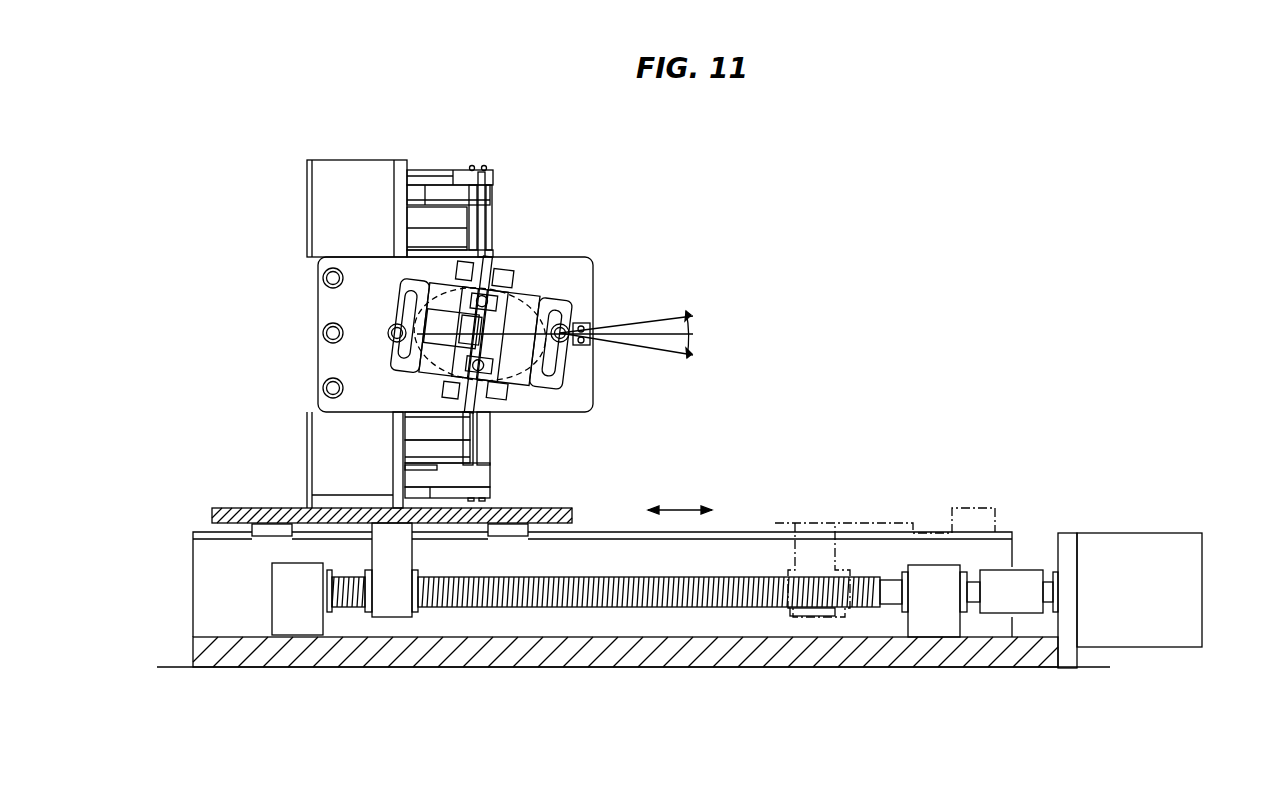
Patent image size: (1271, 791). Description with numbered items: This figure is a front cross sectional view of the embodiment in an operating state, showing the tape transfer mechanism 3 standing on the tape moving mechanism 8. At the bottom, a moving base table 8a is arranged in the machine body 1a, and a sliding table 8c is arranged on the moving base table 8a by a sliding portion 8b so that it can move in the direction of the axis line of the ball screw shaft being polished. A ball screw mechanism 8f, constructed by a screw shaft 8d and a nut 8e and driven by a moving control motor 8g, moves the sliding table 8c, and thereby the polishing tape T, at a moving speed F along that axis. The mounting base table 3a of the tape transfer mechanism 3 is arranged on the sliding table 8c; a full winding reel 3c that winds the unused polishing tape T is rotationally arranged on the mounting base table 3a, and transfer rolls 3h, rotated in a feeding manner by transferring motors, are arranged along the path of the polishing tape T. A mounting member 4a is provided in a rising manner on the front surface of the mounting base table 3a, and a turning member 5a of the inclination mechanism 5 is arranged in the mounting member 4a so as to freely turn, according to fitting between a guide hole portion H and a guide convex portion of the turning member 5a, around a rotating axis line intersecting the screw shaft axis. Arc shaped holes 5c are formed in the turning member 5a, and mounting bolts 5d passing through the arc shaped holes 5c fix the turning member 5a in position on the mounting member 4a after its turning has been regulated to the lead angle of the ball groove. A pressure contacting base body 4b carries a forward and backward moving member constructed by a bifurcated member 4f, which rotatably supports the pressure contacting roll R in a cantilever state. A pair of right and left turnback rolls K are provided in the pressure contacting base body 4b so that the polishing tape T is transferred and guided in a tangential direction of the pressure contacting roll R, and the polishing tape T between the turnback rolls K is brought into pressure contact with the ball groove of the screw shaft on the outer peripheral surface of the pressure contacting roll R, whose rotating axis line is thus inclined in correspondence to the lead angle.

The machine body 1a is at (173, 665).
The tape transfer mechanism 3 is at (513, 246).
The mounting base table 3a is at (354, 180).
The full winding reel 3c is at (472, 170).
The transfer rolls 3h is at (490, 210).
The mounting member 4a is at (590, 306).
The pressure contacting base body 4b is at (540, 376).
The bifurcated member 4f is at (525, 283).
The inclination mechanism 5 is at (453, 312).
The turning member 5a is at (552, 300).
The arc shaped holes 5c is at (567, 357).
The mounting bolts 5d is at (585, 328).
The tape moving mechanism 8 is at (928, 492).
The moving base table 8a is at (940, 650).
The sliding portion 8b is at (263, 536).
The sliding table 8c is at (552, 506).
The screw shaft 8d is at (672, 580).
The nut 8e is at (393, 600).
The ball screw mechanism 8f is at (595, 620).
The moving control motor 8g is at (1107, 553).
The turnback rolls K is at (450, 275).
The guide hole portion H is at (428, 383).
The pressure contacting roll R is at (506, 291).
The polishing tape T is at (470, 420).
The moving speed F is at (680, 476).